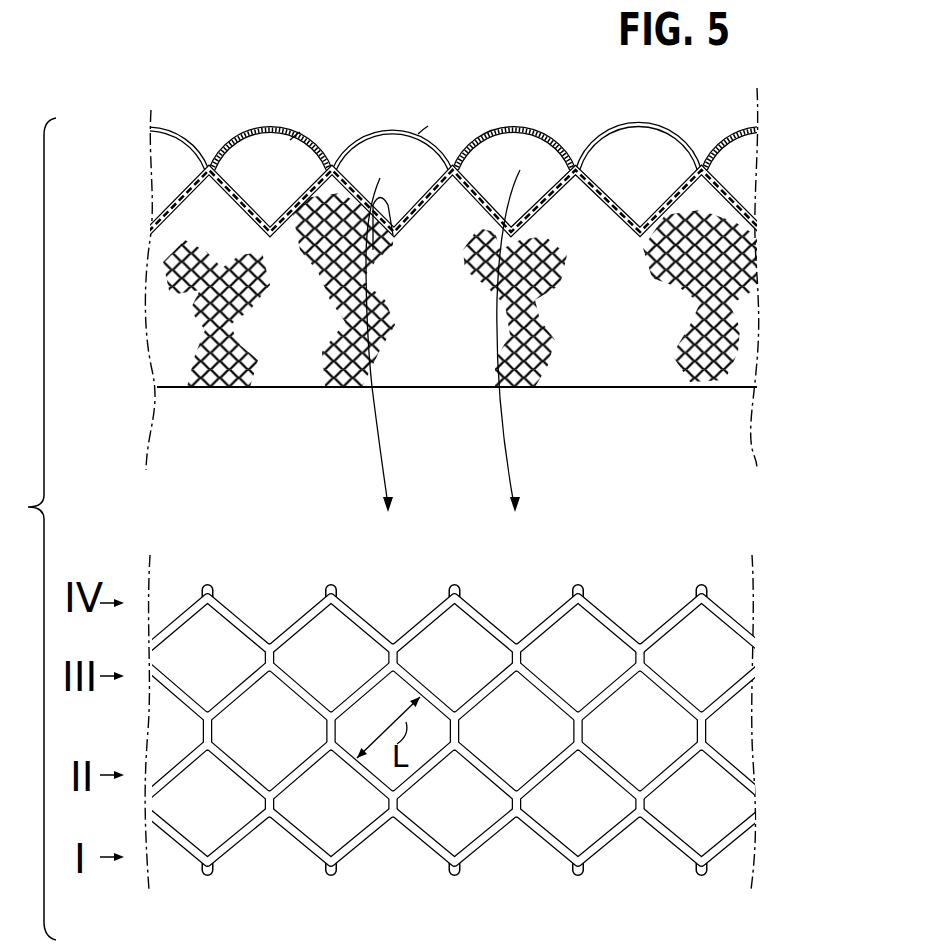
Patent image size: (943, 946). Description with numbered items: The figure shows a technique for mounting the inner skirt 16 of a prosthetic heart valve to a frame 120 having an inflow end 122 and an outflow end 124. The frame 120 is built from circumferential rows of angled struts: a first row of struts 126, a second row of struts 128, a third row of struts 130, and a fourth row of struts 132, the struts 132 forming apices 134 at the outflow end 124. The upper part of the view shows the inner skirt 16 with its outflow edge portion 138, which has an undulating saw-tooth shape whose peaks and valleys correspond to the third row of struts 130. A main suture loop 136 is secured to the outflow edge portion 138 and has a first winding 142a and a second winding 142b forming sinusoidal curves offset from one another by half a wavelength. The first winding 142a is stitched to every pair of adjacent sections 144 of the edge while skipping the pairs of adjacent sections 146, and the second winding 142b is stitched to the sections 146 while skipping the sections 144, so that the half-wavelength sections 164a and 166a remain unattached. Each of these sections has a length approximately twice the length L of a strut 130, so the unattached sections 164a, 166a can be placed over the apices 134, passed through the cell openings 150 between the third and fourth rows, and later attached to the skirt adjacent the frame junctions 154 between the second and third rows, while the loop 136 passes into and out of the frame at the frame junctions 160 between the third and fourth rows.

The inner skirt 16 is at (683, 280).
The frame 120 is at (495, 735).
The inflow end 122 is at (580, 881).
The outflow end 124 is at (573, 584).
The angled struts of first row 126 is at (240, 847).
The angled struts of second row 128 is at (300, 762).
The angled struts of third row 130 is at (367, 690).
The angled struts of fourth row 132 is at (360, 620).
The apices 134 is at (329, 584).
The main suture loop 136 is at (740, 127).
The outflow edge portion 138 is at (610, 203).
The first winding 142a is at (424, 130).
The second winding 142b is at (297, 135).
The sections of outflow edge portion 144 is at (302, 233).
The sections of outflow edge portion 146 is at (413, 212).
The cell openings 150 is at (695, 637).
The frame junctions 154 is at (583, 733).
The frame junctions 160 is at (645, 660).
The half-wavelength sections of first winding 164a is at (160, 135).
The half-wavelength sections of second winding 166a is at (225, 142).